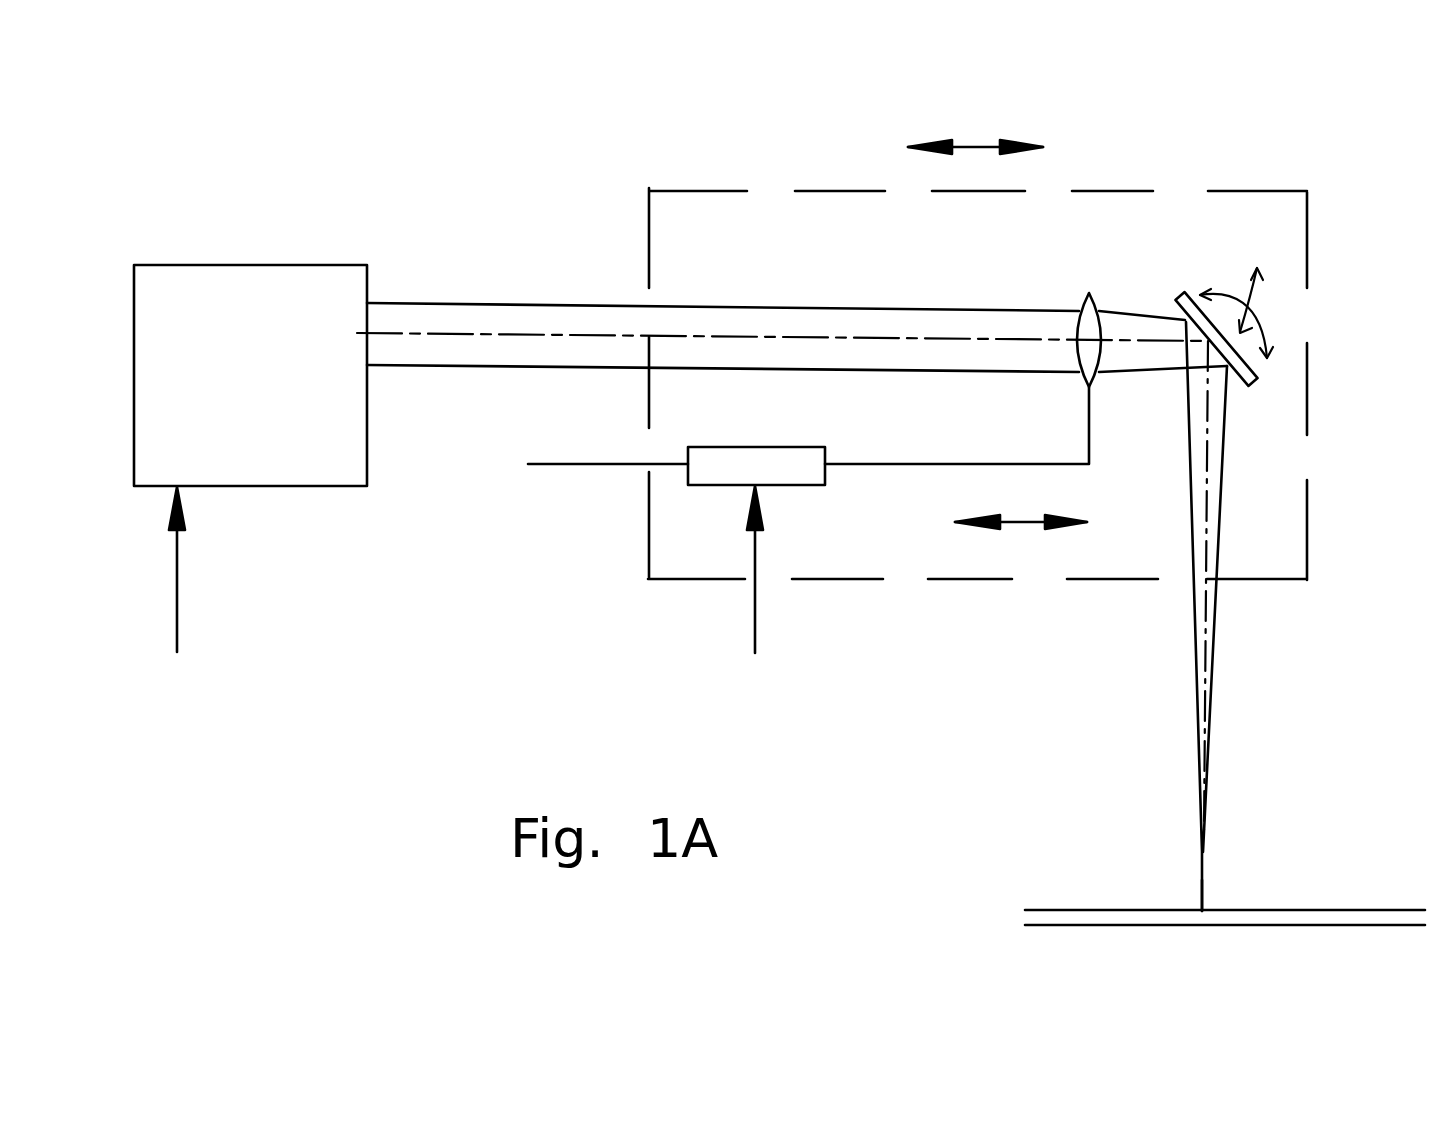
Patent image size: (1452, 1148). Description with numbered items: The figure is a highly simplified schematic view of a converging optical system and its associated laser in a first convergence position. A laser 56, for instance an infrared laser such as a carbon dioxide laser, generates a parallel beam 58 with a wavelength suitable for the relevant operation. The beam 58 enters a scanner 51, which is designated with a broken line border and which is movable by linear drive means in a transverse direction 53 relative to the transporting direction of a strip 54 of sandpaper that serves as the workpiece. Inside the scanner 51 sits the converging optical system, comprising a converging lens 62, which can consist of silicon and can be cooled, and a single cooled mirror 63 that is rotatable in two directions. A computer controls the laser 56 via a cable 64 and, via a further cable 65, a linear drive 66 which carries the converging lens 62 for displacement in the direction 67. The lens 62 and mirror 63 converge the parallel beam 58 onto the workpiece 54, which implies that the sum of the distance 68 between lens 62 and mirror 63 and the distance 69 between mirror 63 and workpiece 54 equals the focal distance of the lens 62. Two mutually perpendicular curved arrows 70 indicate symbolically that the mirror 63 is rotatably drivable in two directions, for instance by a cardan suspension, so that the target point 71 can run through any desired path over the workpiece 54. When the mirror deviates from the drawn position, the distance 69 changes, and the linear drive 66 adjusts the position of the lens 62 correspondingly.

The scanner 51 is at (1265, 222).
The transverse direction 53 is at (980, 140).
The strip of sandpaper 54 is at (1337, 910).
The laser 56 is at (221, 287).
The parallel beam 58 is at (718, 337).
The converging lens 62 is at (1095, 280).
The mirror 63 is at (1258, 379).
The cable 64 is at (195, 597).
The cable 65 is at (767, 622).
The linear drive 66 is at (753, 457).
The direction of displacement 67 is at (1018, 528).
The distance between lens and mirror 68 is at (1143, 342).
The distance between mirror and workpiece 69 is at (1200, 708).
The curved arrows 70 is at (1272, 300).
The target point 71 is at (1212, 902).